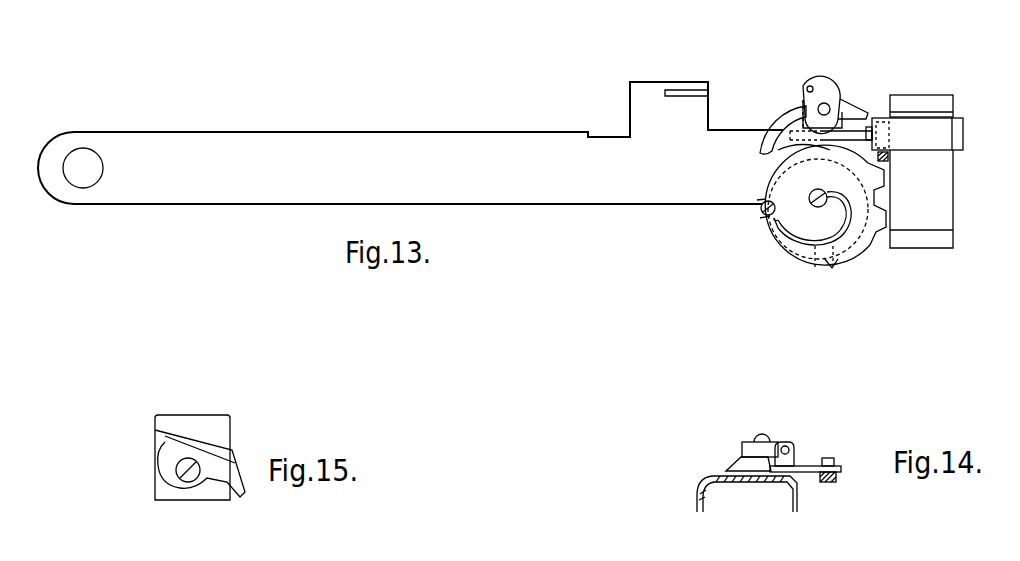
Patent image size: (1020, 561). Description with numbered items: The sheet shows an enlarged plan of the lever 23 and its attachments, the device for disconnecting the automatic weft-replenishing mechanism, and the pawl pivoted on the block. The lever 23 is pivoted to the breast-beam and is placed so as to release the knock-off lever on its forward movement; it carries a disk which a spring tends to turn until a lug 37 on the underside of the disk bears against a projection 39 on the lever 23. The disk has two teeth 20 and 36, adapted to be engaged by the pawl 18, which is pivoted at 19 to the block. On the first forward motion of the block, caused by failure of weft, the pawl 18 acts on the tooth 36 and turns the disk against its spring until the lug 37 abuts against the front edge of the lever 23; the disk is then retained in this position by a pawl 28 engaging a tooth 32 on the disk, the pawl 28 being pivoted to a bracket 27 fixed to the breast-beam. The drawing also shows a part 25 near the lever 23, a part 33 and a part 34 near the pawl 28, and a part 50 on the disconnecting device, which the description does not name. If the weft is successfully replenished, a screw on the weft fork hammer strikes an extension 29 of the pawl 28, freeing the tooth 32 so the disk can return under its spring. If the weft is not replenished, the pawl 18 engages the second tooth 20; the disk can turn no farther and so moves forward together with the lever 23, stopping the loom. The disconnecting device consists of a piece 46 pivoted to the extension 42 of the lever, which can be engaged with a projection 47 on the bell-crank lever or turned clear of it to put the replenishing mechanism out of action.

In FIG. 13, the pawl 18 is at (888, 160).
In FIG. 15, the pawl 18 is at (200, 457).
In FIG. 15, the pivot 19 is at (193, 480).
In FIG. 13, the tooth 20 is at (880, 190).
In FIG. 13, the lever 23 is at (410, 143).
In FIG. 13, the lug 25 is at (680, 86).
In FIG. 13, the bracket 27 is at (802, 97).
In FIG. 13, the pawl 28 is at (765, 143).
In FIG. 13, the extension 29 is at (850, 121).
In FIG. 13, the tooth 32 is at (788, 151).
In FIG. 13, the cam 33 is at (826, 94).
In FIG. 13, the pivot pin 34 is at (810, 86).
In FIG. 13, the tooth 36 is at (880, 228).
In FIG. 13, the lug 37 is at (762, 225).
In FIG. 13, the projection 39 is at (830, 262).
In FIG. 14, the extension 42 is at (794, 452).
In FIG. 14, the coupling piece 46 is at (745, 448).
In FIG. 14, the projection 47 is at (762, 438).
In FIG. 14, the bolt 50 is at (842, 473).